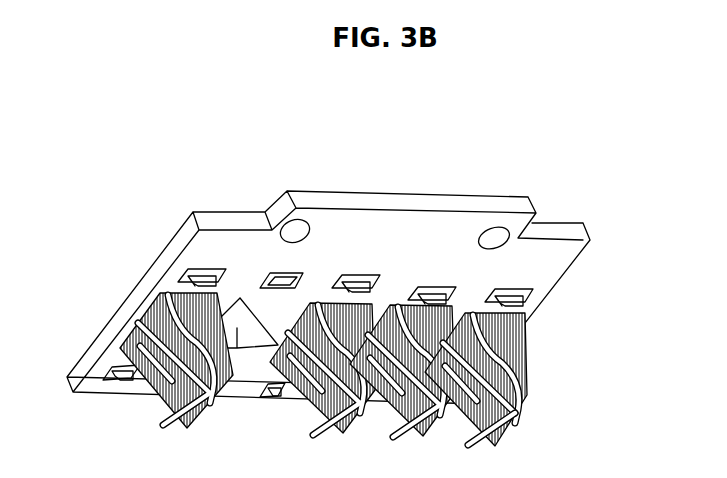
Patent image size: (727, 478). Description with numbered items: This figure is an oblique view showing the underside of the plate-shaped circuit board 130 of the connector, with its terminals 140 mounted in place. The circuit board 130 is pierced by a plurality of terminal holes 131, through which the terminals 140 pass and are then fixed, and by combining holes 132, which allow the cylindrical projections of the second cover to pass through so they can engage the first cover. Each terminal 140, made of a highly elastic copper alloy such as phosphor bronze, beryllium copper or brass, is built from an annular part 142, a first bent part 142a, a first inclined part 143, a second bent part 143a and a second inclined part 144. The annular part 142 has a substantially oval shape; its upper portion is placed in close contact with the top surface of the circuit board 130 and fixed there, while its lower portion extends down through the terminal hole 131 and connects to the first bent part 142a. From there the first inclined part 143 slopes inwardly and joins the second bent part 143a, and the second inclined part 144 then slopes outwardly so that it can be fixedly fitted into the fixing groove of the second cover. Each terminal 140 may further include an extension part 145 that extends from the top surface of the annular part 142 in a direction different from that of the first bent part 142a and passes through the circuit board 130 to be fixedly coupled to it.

The circuit board 130 is at (384, 200).
The terminal hole 131 is at (273, 313).
The combining hole 132 is at (498, 233).
The terminal 140 is at (413, 369).
The annular part 142 is at (522, 316).
The first bent part 142a is at (525, 331).
The first inclined part 143 is at (523, 352).
The second bent part 143a is at (530, 370).
The second inclined part 144 is at (530, 390).
The extension part 145 is at (519, 294).